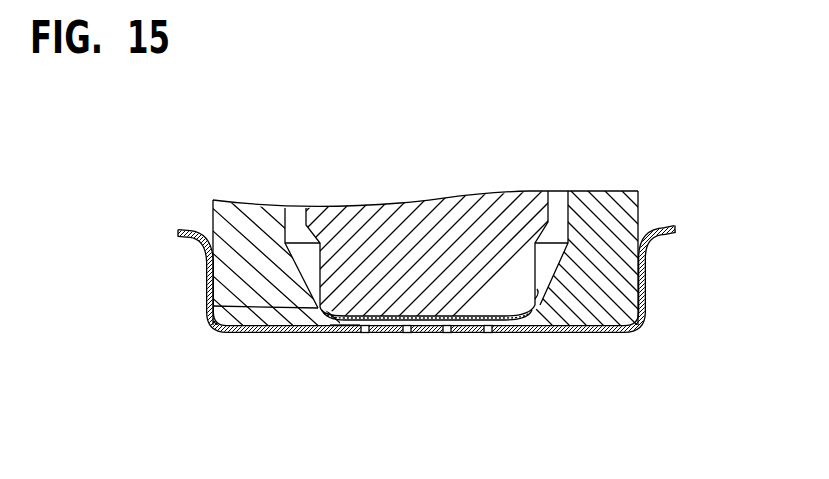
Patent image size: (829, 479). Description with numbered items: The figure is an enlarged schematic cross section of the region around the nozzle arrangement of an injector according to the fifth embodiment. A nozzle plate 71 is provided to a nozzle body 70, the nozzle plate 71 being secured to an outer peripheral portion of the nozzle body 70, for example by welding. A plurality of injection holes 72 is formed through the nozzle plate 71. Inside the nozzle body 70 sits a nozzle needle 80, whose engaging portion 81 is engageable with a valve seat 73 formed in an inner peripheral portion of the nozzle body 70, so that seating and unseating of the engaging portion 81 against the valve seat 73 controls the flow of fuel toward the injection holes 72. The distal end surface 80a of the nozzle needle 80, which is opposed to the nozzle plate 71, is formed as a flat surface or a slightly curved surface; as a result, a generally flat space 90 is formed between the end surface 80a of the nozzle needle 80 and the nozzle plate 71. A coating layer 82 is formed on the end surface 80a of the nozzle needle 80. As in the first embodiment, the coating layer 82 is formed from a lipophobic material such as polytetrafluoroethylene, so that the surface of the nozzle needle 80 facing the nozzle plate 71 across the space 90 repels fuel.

The nozzle body 70 is at (613, 202).
The nozzle plate 71 is at (206, 271).
The injection holes 72 is at (365, 333).
The valve seat 73 is at (537, 289).
The nozzle needle 80 is at (352, 218).
The distal end surface 80a is at (470, 316).
The engaging portion 81 is at (207, 306).
The coating layer 82 is at (343, 332).
The generally flat space 90 is at (510, 321).